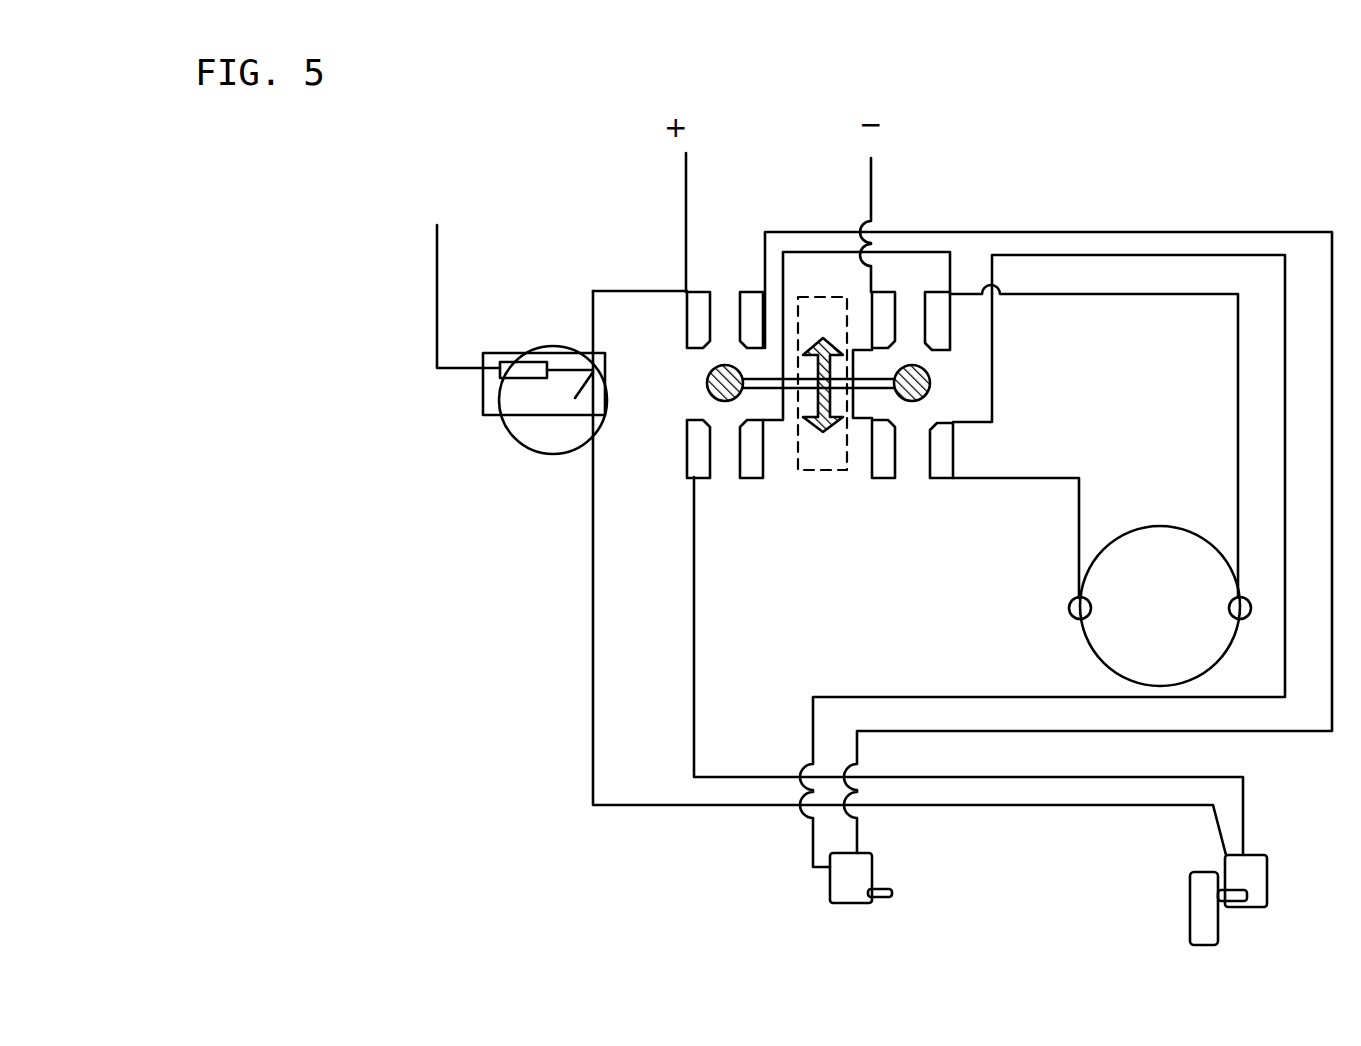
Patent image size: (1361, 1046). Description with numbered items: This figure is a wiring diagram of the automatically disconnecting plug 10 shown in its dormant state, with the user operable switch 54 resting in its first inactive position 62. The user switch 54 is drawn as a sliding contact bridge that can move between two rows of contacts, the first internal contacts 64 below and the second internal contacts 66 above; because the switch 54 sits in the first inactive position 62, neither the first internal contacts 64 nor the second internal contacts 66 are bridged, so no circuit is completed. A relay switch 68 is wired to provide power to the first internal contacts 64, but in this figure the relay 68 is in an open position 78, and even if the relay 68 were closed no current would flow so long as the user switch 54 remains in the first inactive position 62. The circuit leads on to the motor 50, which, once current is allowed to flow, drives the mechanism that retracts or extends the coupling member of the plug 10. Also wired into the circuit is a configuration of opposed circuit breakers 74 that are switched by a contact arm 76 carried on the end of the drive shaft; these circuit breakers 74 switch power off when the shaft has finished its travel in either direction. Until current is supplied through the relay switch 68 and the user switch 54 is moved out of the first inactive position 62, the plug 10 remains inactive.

The automatically disconnecting plug 10 is at (490, 637).
The motor 50 is at (1182, 584).
The user operable switch 54 is at (803, 362).
The first inactive position 62 is at (695, 382).
The first internal contacts 64 is at (937, 478).
The second internal contacts 66 is at (933, 307).
The relay switch 68 is at (555, 363).
The opposed circuit breakers 74 is at (1235, 870).
The contact arm 76 is at (1208, 903).
The open position 78 is at (520, 443).